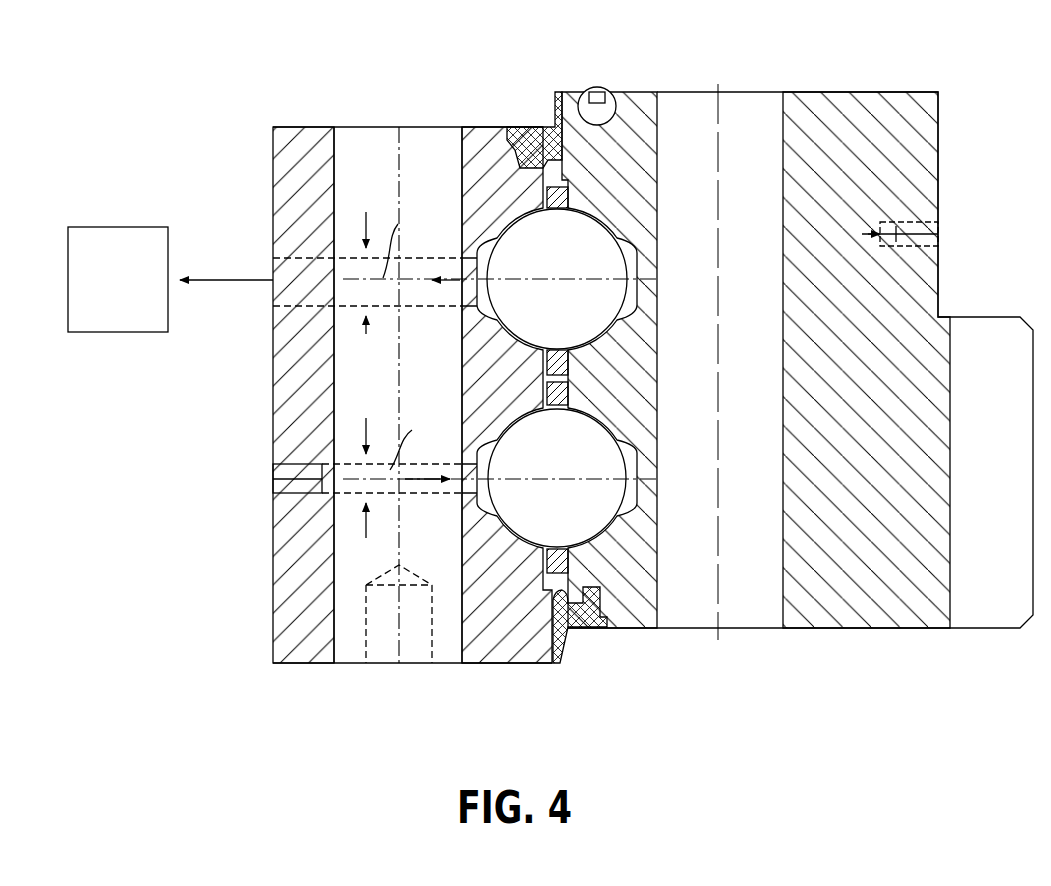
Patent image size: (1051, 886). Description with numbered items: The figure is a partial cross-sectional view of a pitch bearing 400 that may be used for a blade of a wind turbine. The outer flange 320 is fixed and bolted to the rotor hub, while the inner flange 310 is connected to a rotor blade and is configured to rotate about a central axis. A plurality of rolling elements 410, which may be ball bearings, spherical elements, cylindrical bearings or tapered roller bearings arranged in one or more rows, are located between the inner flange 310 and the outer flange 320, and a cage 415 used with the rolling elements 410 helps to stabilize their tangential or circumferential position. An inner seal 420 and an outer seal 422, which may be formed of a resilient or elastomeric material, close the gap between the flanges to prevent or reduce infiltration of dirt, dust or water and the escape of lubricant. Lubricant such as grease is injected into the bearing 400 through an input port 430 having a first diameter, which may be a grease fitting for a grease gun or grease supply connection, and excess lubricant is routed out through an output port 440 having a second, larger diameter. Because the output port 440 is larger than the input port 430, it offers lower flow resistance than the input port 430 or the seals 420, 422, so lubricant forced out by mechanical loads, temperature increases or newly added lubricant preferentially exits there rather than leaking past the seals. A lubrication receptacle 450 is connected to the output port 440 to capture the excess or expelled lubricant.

The inner flange 310 is at (880, 620).
The outer flange 320 is at (300, 642).
The pitch bearing 400 is at (293, 71).
The rolling elements 410 is at (535, 270).
The cage 415 is at (570, 196).
The inner seal 420 is at (580, 630).
The outer seal 422 is at (524, 120).
The input port 430 is at (272, 481).
The output port 440 is at (272, 268).
The lubrication receptacle 450 is at (94, 291).